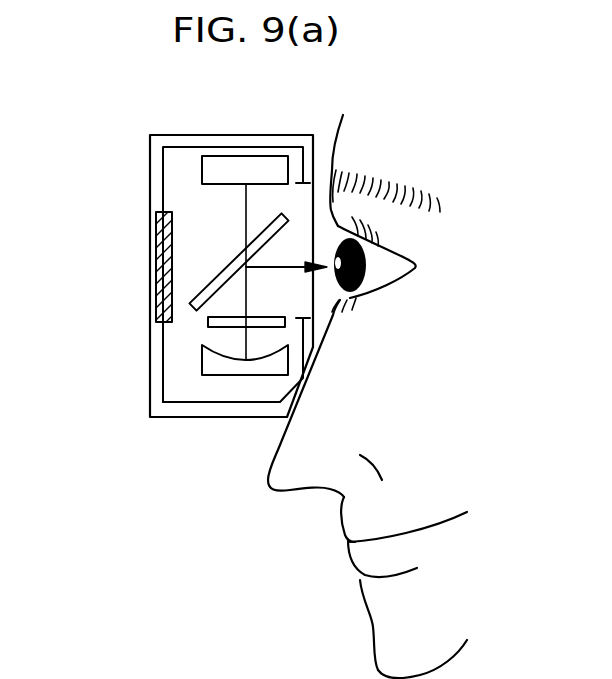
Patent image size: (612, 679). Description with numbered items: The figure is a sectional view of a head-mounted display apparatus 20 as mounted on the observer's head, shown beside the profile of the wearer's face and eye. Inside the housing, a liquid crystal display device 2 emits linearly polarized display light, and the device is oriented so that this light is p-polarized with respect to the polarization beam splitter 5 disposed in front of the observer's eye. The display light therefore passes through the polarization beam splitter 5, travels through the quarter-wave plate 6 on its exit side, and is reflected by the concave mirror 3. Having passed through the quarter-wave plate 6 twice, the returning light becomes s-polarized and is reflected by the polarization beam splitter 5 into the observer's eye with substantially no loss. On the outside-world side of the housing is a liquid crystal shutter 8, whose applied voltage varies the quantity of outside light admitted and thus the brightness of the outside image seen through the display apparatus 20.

The liquid crystal display device 2 is at (255, 156).
The concave mirror 3 is at (247, 370).
The polarization beam splitter 5 is at (233, 267).
The quarter-wave plate 6 is at (208, 322).
The liquid crystal shutter 8 is at (156, 263).
The head-mounted display apparatus 20 is at (138, 390).